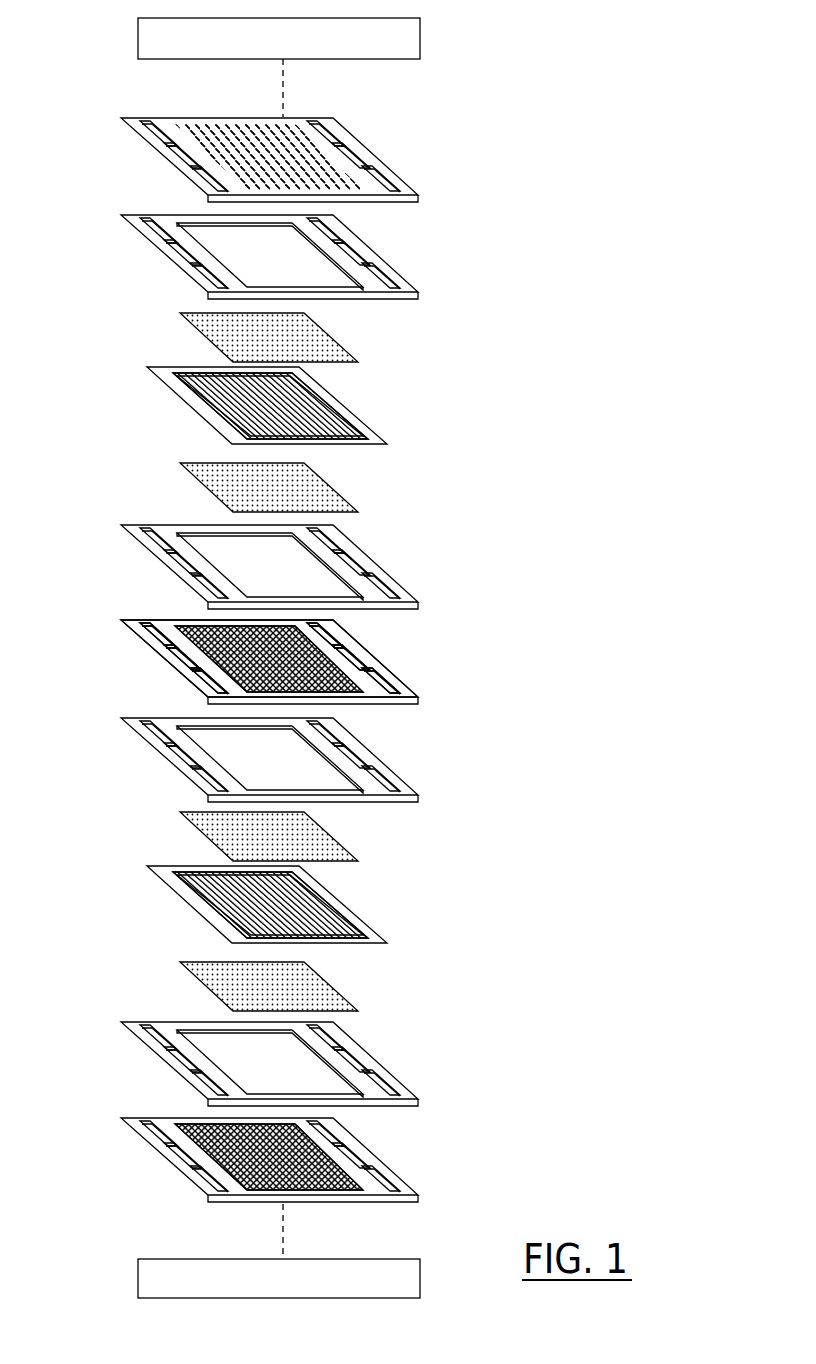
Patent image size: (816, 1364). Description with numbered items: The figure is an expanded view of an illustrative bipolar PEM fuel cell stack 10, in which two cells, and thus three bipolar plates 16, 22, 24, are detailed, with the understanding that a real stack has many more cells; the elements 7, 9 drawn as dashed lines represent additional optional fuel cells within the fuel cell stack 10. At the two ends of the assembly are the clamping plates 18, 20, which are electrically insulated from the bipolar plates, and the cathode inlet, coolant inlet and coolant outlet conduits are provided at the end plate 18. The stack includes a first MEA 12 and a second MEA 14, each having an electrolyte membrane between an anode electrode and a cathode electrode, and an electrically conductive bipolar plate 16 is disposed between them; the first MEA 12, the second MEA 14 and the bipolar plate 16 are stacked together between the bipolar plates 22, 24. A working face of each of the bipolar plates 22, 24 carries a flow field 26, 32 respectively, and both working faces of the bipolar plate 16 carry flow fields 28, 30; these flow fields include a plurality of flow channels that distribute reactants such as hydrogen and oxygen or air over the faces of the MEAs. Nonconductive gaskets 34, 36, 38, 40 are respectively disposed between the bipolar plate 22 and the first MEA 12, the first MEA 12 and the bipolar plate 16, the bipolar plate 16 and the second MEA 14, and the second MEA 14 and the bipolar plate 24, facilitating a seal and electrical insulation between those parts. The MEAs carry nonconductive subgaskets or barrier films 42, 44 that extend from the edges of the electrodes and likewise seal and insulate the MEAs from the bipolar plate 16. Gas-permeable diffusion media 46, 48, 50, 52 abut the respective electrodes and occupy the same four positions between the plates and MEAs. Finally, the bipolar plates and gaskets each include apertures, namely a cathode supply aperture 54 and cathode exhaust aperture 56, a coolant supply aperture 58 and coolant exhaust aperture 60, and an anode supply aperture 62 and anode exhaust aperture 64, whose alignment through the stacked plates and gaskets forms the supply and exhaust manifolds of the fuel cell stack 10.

The fuel cell stack 10 is at (538, 368).
The clamping plate 18 is at (420, 38).
The clamping plate 20 is at (420, 1270).
The additional optional fuel cell 7 is at (285, 98).
The additional optional fuel cell 9 is at (290, 1245).
The bipolar plate 22 is at (148, 153).
The flow field 26 is at (172, 168).
The nonconductive gasket 34 is at (173, 226).
The gas-permeable diffusion medium 46 is at (210, 325).
The subgasket 42 is at (150, 372).
The first MEA 12 is at (205, 404).
The gas-permeable diffusion medium 48 is at (207, 480).
The nonconductive gasket 36 is at (165, 552).
The bipolar plate 16 is at (133, 636).
The flow field 30 is at (200, 685).
The cathode supply aperture 54 is at (150, 632).
The coolant exhaust aperture 60 is at (185, 668).
The anode exhaust aperture 64 is at (210, 697).
The anode supply aperture 62 is at (335, 642).
The coolant supply aperture 58 is at (365, 663).
The flow field 28 is at (378, 678).
The cathode exhaust aperture 56 is at (395, 687).
The nonconductive gasket 38 is at (365, 783).
The gas-permeable diffusion medium 50 is at (325, 840).
The subgasket 44 is at (185, 905).
The second MEA 14 is at (363, 912).
The gas-permeable diffusion medium 52 is at (325, 992).
The nonconductive gasket 40 is at (350, 1072).
The bipolar plate 24 is at (367, 1142).
The flow field 32 is at (360, 1180).